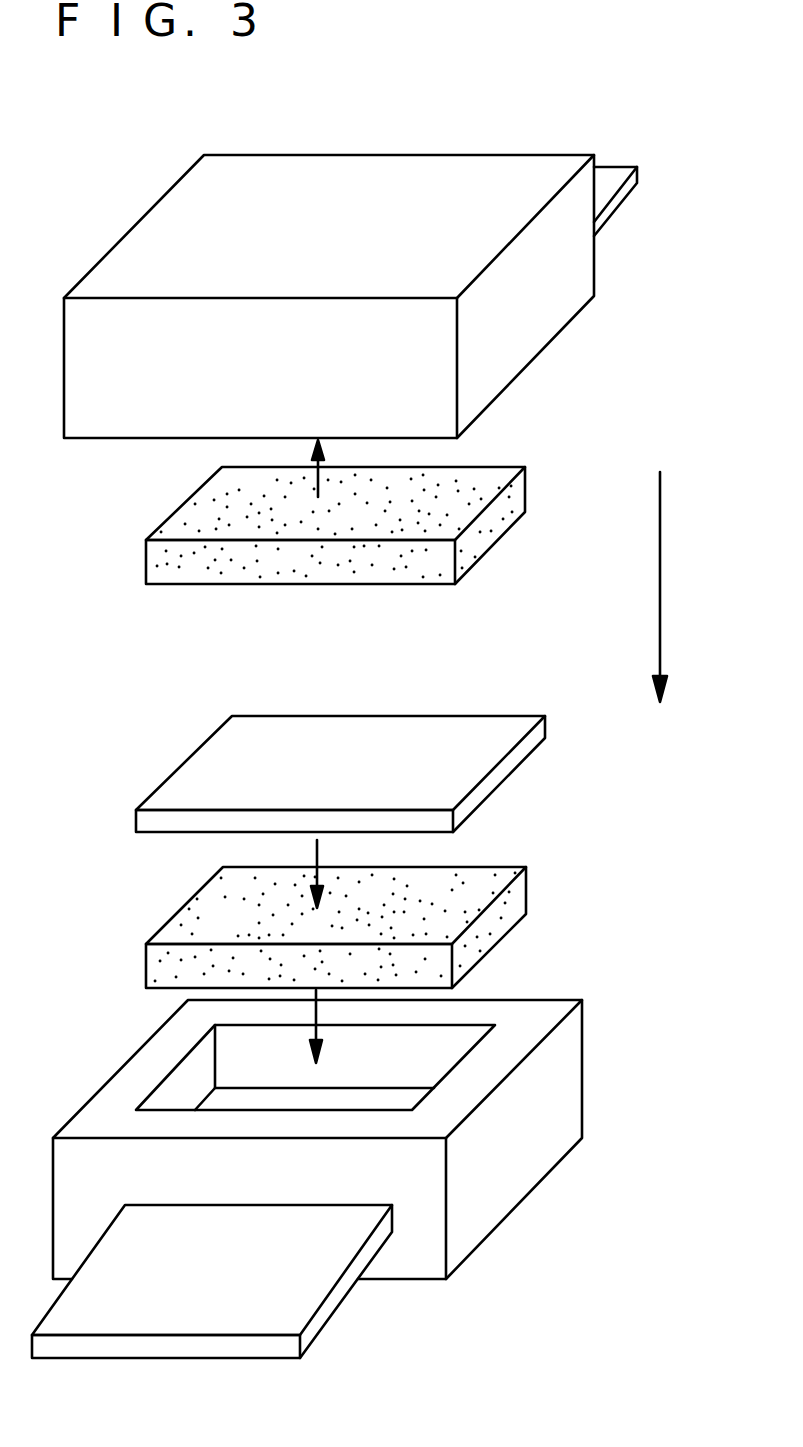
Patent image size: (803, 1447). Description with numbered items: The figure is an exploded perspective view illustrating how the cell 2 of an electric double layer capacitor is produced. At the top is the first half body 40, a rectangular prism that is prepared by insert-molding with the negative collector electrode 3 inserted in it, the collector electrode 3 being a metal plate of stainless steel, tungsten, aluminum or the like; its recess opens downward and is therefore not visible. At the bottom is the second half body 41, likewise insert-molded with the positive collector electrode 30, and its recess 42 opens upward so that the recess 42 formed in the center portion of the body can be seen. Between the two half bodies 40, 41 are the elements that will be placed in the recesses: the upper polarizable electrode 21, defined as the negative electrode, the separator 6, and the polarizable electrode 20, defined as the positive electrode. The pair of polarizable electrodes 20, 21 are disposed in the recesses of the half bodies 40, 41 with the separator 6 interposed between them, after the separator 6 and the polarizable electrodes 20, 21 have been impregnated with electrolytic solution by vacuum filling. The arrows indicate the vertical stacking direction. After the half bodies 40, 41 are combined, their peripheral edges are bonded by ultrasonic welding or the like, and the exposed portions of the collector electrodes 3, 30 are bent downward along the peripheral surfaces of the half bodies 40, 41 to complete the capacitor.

The cell 2 is at (660, 388).
The negative collector electrode 3 is at (630, 185).
The separator 6 is at (515, 762).
The polarizable electrode 20 is at (500, 925).
The polarizable electrode 21 is at (498, 532).
The positive collector electrode 30 is at (323, 1312).
The first half body 40 is at (455, 183).
The second half body 41 is at (371, 1147).
The recess 42 is at (440, 1052).